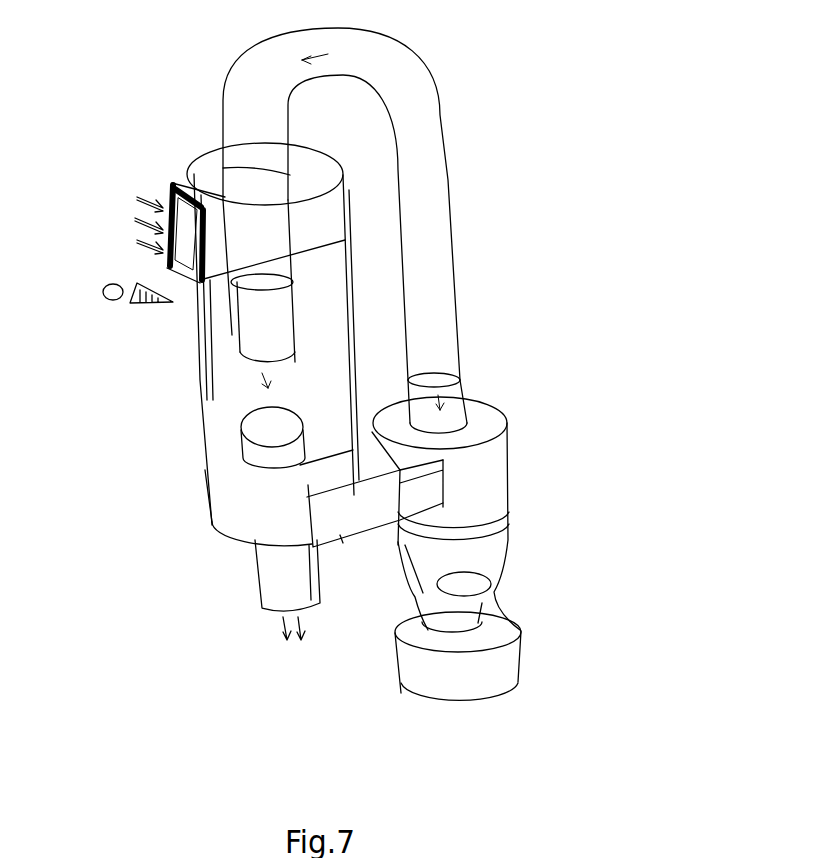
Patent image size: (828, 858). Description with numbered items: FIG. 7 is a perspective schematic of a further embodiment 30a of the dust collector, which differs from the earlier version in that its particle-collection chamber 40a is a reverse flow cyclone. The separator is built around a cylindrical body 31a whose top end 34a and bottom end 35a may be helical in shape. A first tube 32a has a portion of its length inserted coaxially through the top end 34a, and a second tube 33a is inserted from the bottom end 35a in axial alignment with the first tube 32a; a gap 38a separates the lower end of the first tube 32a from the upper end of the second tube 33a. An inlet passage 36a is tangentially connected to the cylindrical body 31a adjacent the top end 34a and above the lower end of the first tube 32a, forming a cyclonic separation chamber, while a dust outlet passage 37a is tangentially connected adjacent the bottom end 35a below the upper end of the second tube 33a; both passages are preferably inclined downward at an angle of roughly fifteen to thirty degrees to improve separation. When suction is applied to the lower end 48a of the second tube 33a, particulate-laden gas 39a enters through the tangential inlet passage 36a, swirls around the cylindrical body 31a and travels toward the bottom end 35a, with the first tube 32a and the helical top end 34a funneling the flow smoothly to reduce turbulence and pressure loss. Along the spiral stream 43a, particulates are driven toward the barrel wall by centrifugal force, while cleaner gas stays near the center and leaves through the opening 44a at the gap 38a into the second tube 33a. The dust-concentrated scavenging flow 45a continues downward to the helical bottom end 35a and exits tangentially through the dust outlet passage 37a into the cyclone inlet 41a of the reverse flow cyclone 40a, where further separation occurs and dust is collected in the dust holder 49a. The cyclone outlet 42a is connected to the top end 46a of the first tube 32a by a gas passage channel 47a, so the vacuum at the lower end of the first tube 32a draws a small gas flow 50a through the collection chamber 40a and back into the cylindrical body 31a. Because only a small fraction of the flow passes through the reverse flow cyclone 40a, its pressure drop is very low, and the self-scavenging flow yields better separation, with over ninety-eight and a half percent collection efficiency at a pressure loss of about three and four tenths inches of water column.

The dust collector 30a is at (614, 112).
The cylindrical body 31a is at (355, 307).
The first tube 32a is at (295, 312).
The second tube 33a is at (310, 426).
The top end 34a is at (295, 160).
The bottom end 35a is at (237, 533).
The inlet passage 36a is at (187, 177).
The dust outlet passage 37a is at (343, 543).
The gap 38a is at (228, 378).
The particulate-laden gas 39a is at (160, 226).
The particle-collection chamber 40a is at (503, 490).
The cyclone inlet 41a is at (405, 468).
The cyclone outlet 42a is at (460, 398).
The spiral stream 43a is at (242, 448).
The opening 44a is at (288, 398).
The scavenging flow 45a is at (305, 513).
The top end of first tube 46a is at (258, 152).
The gas passage channel 47a is at (435, 97).
The lower end of second tube 48a is at (283, 643).
The dust holder 49a is at (503, 650).
The gas flow 50a is at (240, 323).